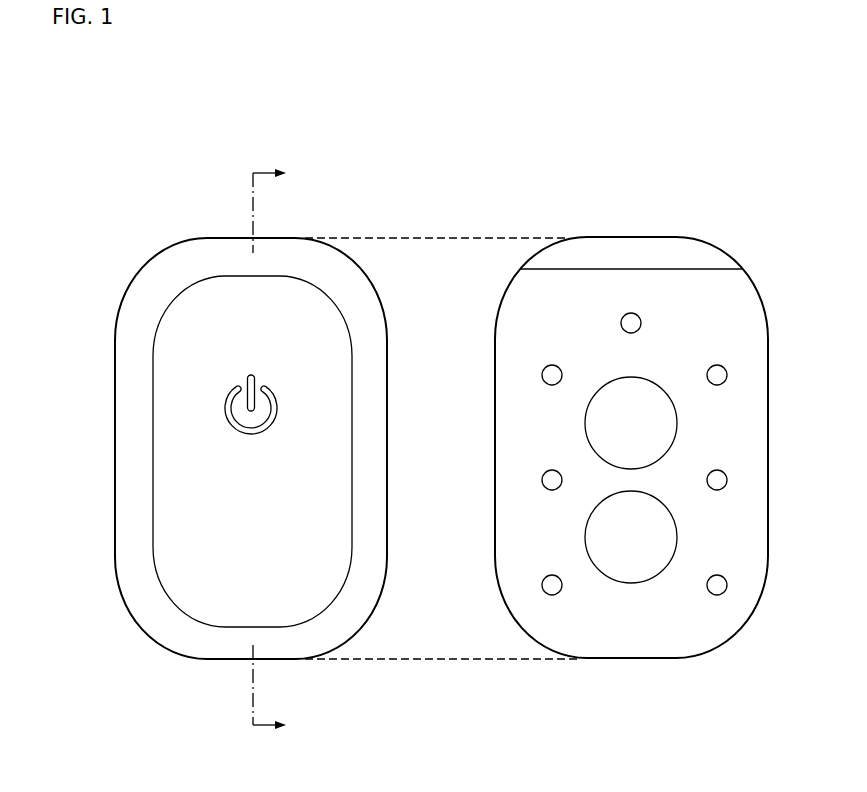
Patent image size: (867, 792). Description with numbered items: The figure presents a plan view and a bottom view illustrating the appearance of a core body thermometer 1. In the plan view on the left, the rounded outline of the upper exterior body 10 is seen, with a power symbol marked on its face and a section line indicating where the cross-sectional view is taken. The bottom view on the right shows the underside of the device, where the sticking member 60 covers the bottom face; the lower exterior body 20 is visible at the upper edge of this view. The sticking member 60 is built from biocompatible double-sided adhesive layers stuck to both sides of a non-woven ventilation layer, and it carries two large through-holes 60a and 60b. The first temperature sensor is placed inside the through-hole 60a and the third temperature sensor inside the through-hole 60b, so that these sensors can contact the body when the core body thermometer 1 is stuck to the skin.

The core body thermometer 1 is at (323, 231).
The upper exterior body 10 is at (380, 446).
The lower exterior body 20 is at (545, 259).
The sticking member 60 is at (600, 447).
The through-hole 60a is at (586, 421).
The through-hole 60b is at (586, 536).